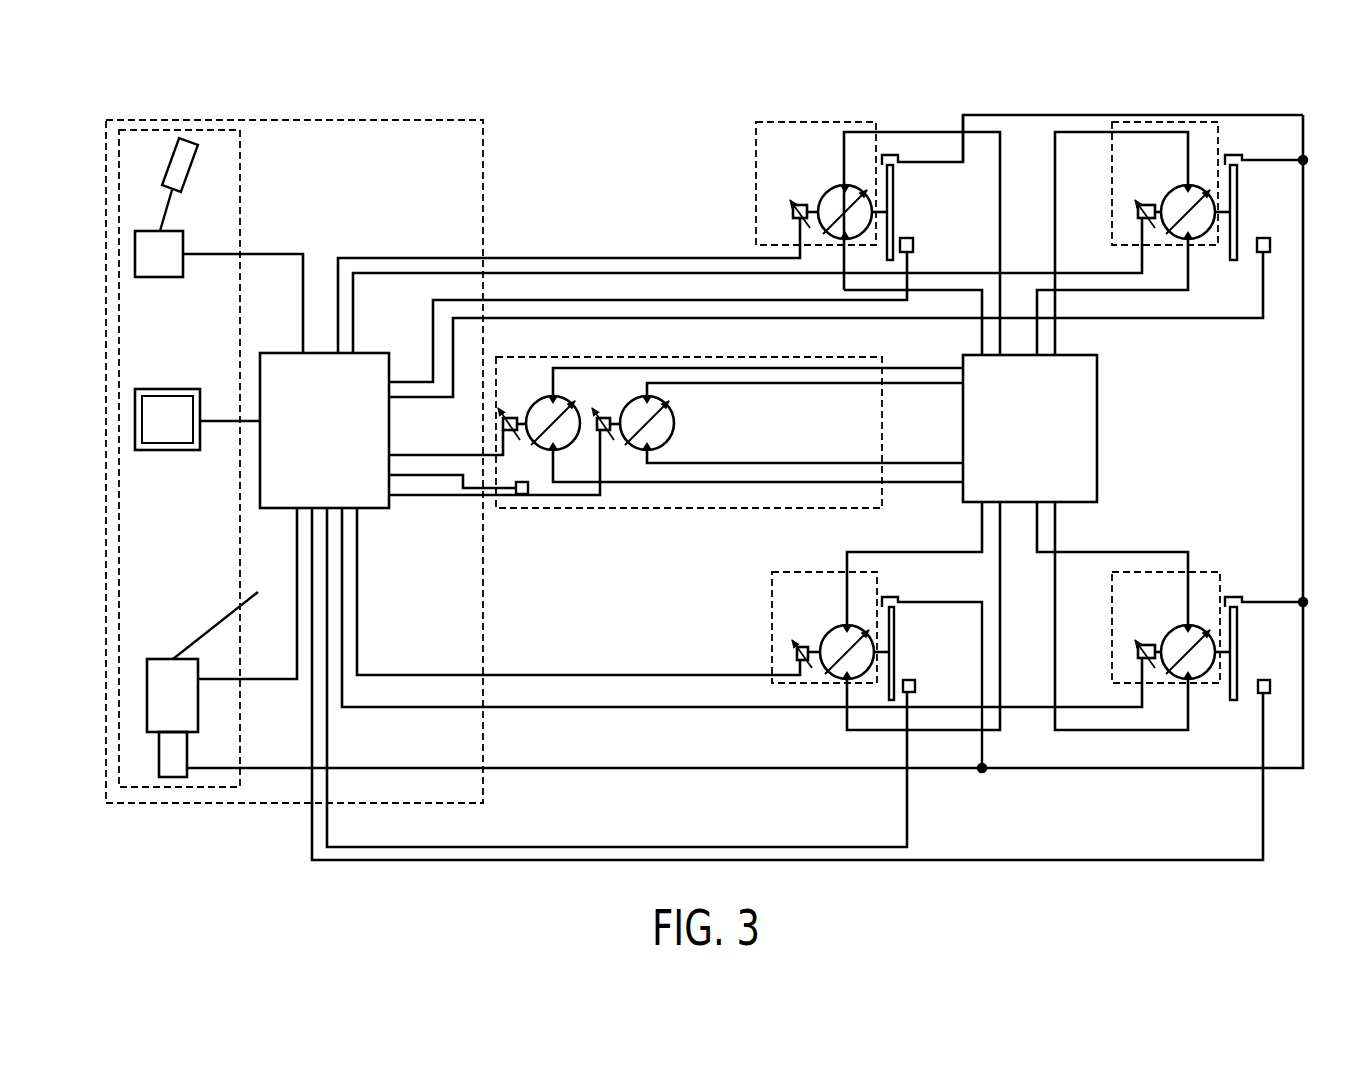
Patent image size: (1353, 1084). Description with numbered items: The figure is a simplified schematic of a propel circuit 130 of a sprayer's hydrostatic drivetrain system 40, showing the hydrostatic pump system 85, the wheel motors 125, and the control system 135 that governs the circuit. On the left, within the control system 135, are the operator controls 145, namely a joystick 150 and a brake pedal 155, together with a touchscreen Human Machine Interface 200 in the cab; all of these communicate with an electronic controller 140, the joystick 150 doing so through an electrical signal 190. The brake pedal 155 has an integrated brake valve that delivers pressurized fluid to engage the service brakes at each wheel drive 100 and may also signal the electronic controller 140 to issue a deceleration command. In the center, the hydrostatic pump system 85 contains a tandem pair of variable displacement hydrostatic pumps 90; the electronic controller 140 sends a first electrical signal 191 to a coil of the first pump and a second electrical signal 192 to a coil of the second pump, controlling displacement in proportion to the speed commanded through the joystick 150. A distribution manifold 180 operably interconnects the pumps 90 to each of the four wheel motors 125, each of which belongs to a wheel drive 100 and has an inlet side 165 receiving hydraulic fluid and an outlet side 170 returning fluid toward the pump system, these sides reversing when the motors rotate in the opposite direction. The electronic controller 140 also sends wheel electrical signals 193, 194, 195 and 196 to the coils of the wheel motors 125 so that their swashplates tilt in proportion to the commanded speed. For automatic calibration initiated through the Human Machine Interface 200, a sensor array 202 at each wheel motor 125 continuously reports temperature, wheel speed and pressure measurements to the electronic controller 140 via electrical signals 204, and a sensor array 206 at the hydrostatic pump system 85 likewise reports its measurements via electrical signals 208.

The hydrostatic drivetrain system 40 is at (1005, 793).
The hydrostatic pump system 85 is at (748, 355).
The variable displacement hydrostatic pumps 90 is at (518, 392).
The wheel drive 100 is at (875, 110).
The wheel motor 125 is at (780, 115).
The propel circuit 130 is at (905, 110).
The control system 135 is at (345, 105).
The electronic controller 140 is at (405, 368).
The operator controls 145 is at (258, 218).
The joystick 150 is at (242, 165).
The brake pedal 155 is at (160, 585).
The inlet side 165 is at (862, 255).
The outlet side 170 is at (895, 128).
The distribution manifold 180 is at (1110, 400).
The electrical signal 190 is at (200, 262).
The first electrical signal 191 is at (410, 455).
The second electrical signal 192 is at (410, 498).
The wheel electrical signal 193 is at (530, 258).
The wheel electrical signal 194 is at (580, 273).
The wheel electrical signal 195 is at (520, 675).
The wheel electrical signal 196 is at (578, 707).
The Human Machine Interface 200 is at (135, 425).
The sensor array 202 is at (915, 242).
The electrical signals 204 is at (650, 300).
The sensor array 206 is at (530, 490).
The electrical signals 208 is at (430, 478).